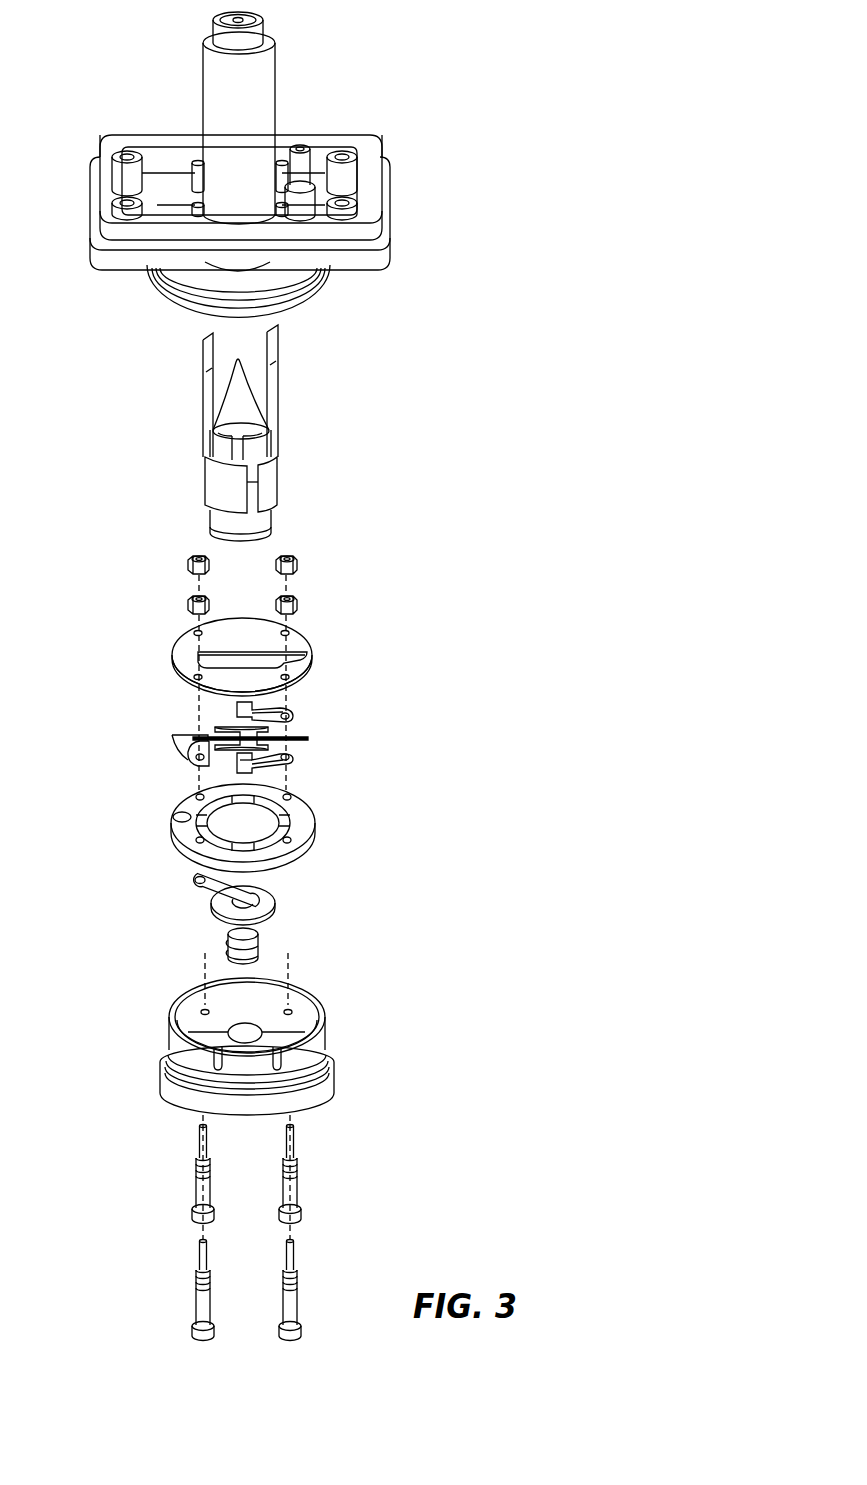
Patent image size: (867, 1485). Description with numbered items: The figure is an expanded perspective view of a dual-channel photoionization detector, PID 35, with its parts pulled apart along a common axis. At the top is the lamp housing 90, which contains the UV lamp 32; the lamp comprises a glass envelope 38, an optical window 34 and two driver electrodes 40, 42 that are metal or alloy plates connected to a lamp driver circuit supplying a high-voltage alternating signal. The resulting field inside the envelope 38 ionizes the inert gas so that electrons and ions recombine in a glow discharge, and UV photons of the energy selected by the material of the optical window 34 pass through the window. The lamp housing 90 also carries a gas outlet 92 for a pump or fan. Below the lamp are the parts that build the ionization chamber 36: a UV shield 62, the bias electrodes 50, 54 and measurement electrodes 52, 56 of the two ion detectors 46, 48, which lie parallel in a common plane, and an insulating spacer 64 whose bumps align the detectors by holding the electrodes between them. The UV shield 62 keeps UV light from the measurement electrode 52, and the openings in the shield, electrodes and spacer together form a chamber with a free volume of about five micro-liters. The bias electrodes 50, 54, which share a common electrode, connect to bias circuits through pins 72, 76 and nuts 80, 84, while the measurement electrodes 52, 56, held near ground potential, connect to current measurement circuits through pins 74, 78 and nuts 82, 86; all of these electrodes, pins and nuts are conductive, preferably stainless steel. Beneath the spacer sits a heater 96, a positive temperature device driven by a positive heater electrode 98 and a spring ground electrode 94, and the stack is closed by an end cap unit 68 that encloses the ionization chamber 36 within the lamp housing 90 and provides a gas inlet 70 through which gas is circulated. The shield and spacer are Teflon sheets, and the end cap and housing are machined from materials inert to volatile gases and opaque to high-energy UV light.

The UV lamp 32 is at (402, 402).
The optical window 34 is at (266, 540).
The PID 35 is at (448, 124).
The ionization chamber 36 is at (396, 622).
The glass envelope 38 is at (211, 516).
The driver electrode 40 is at (205, 470).
The driver electrode 42 is at (272, 470).
The ion detector 46 is at (302, 768).
The ion detector 48 is at (265, 763).
The bias electrode 50 is at (172, 741).
The measurement electrode 52 is at (237, 708).
The bias electrode 54 is at (240, 750).
The measurement electrode 56 is at (245, 762).
The UV shield 62 is at (300, 680).
The insulating spacer 64 is at (178, 836).
The end cap unit 68 is at (320, 1085).
The gas inlet 70 is at (250, 1033).
The pin 72 is at (196, 1192).
The pin 74 is at (297, 1189).
The pin 76 is at (199, 1256).
The pin 78 is at (297, 1254).
The nut 80 is at (188, 566).
The nut 82 is at (296, 566).
The nut 84 is at (188, 607).
The nut 86 is at (296, 607).
The lamp housing 90 is at (311, 298).
The gas outlet 92 is at (300, 147).
The spring ground electrode 94 is at (259, 939).
The heater 96 is at (276, 904).
The positive heater electrode 98 is at (198, 887).